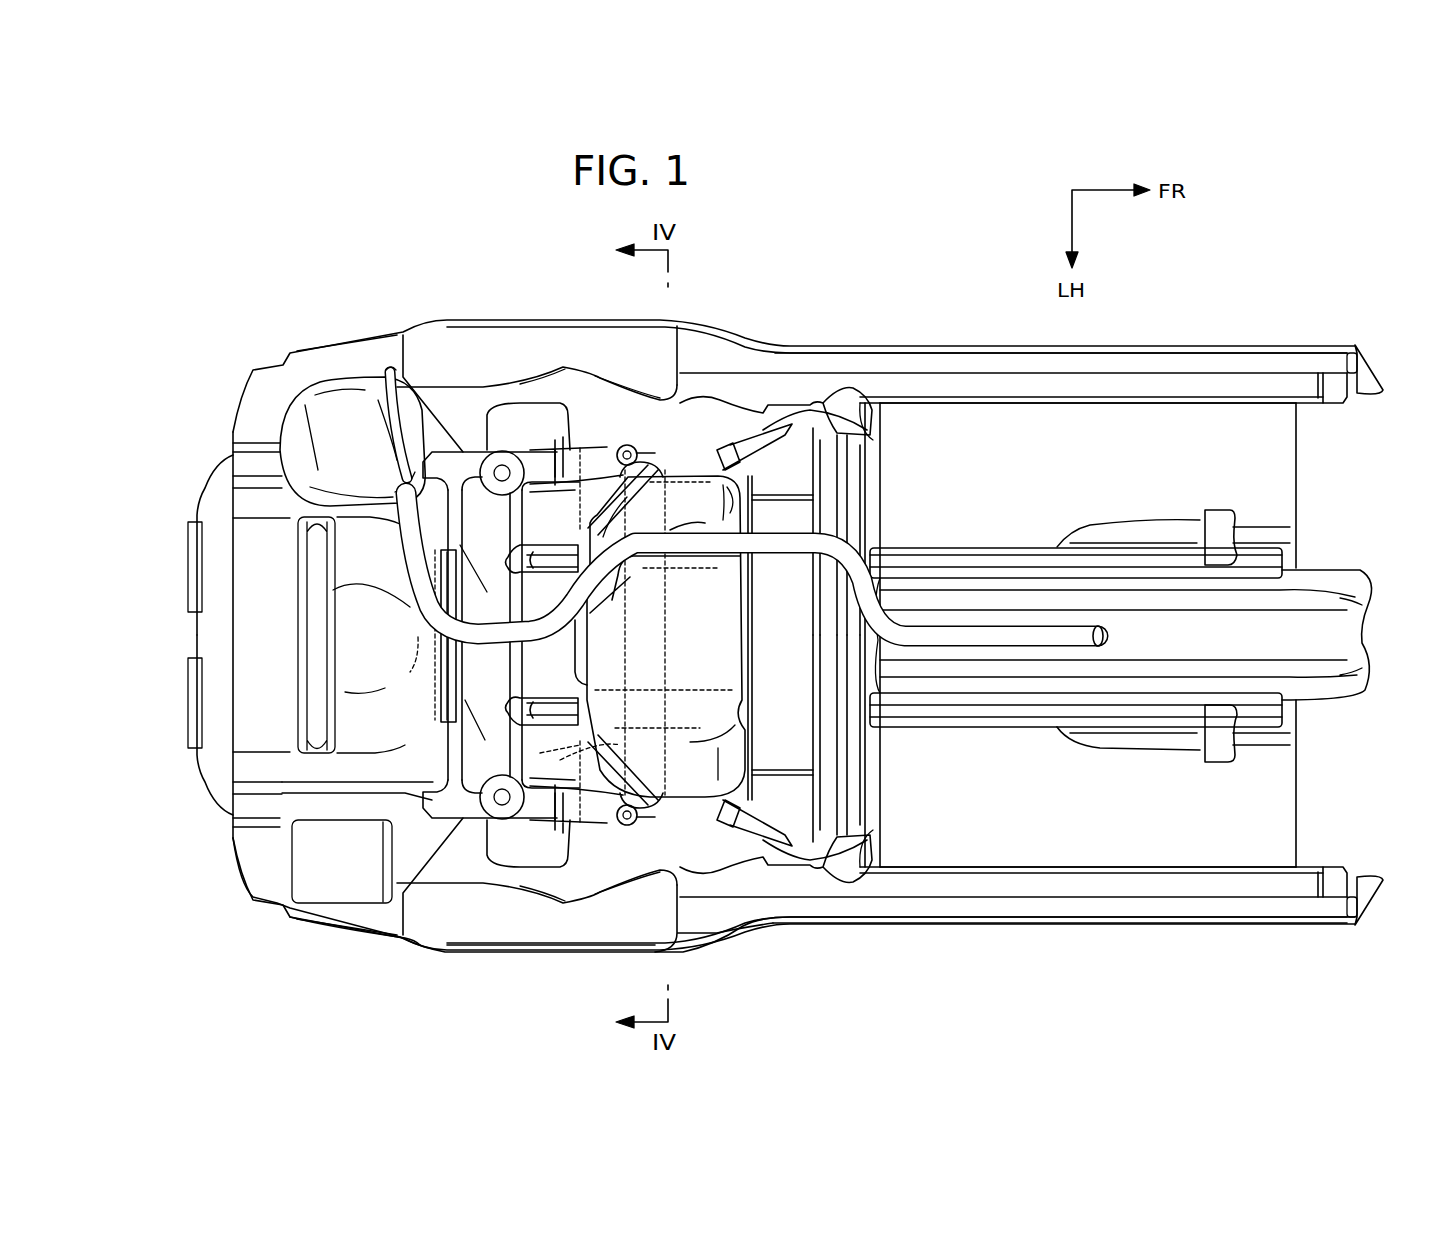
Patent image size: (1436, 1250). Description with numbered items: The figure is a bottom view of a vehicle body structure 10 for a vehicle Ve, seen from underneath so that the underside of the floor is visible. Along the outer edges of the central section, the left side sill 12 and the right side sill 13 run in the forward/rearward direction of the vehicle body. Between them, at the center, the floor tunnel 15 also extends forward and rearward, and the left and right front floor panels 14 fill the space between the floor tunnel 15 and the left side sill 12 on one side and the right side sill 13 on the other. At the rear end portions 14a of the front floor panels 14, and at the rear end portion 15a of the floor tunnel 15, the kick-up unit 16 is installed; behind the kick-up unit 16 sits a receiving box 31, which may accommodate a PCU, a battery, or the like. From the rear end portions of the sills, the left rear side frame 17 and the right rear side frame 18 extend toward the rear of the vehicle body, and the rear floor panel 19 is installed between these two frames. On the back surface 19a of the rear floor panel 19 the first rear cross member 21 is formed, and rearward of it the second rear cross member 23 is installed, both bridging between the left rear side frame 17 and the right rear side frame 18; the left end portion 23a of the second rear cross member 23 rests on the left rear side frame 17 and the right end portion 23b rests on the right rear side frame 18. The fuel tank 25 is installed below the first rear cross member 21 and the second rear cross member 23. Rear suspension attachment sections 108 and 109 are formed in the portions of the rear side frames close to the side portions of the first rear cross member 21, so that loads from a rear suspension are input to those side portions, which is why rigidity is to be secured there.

The vehicle body structure 10 is at (769, 312).
The vehicle Ve is at (733, 270).
The left side sill 12 is at (1120, 905).
The right side sill 13 is at (1187, 358).
The front floor panel 14 is at (1257, 418).
The rear end portion of front floor panel 14a is at (888, 478).
The floor tunnel 15 is at (1118, 580).
The rear end portion of floor tunnel 15a is at (897, 667).
The kick-up unit 16 is at (878, 455).
The left rear side frame 17 is at (540, 845).
The right rear side frame 18 is at (537, 458).
The rear floor panel 19 is at (530, 593).
The back surface of rear floor panel 19a is at (530, 660).
The first rear cross member 21 is at (665, 651).
The second rear cross member 23 is at (540, 753).
The left end portion of second rear cross member 23a is at (565, 795).
The right end portion of second rear cross member 23b is at (568, 490).
The fuel tank 25 is at (722, 765).
The receiving box 31 is at (795, 510).
The rear suspension attachment section 108 is at (653, 828).
The rear suspension attachment section 109 is at (653, 444).